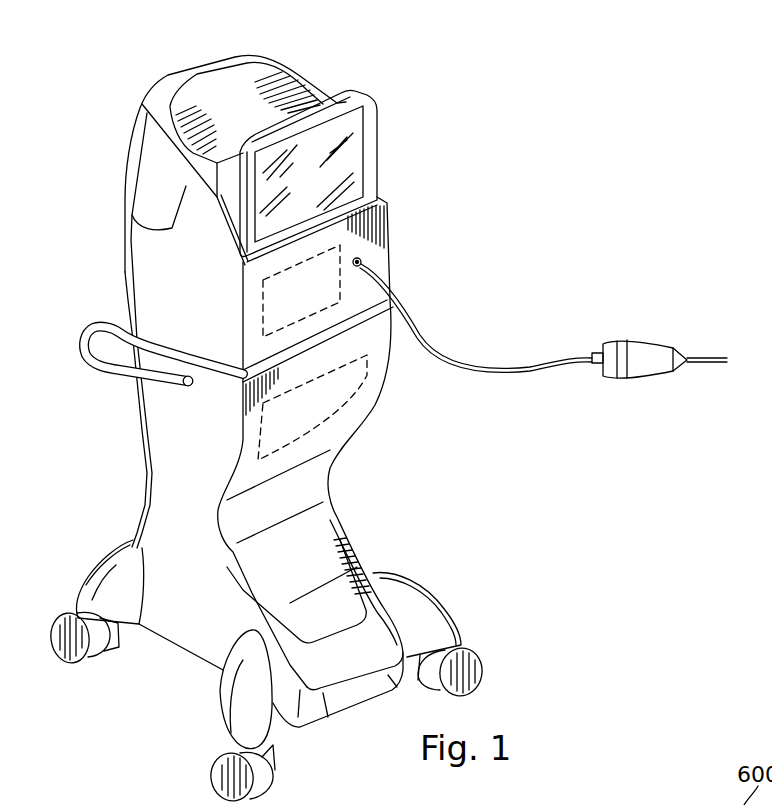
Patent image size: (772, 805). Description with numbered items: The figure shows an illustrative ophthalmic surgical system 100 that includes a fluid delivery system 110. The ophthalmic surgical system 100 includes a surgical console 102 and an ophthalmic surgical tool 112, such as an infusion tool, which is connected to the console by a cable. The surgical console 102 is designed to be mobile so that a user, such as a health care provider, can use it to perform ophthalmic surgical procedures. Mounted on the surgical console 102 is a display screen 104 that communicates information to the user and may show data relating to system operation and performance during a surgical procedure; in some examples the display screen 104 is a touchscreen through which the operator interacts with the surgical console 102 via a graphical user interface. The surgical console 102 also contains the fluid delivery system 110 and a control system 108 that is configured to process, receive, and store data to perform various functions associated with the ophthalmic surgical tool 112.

The ophthalmic surgical system 100 is at (528, 81).
The surgical console 102 is at (372, 406).
The display screen 104 is at (360, 122).
The control system 108 is at (246, 434).
The fluid delivery system 110 is at (262, 310).
The ophthalmic surgical tool 112 is at (648, 345).